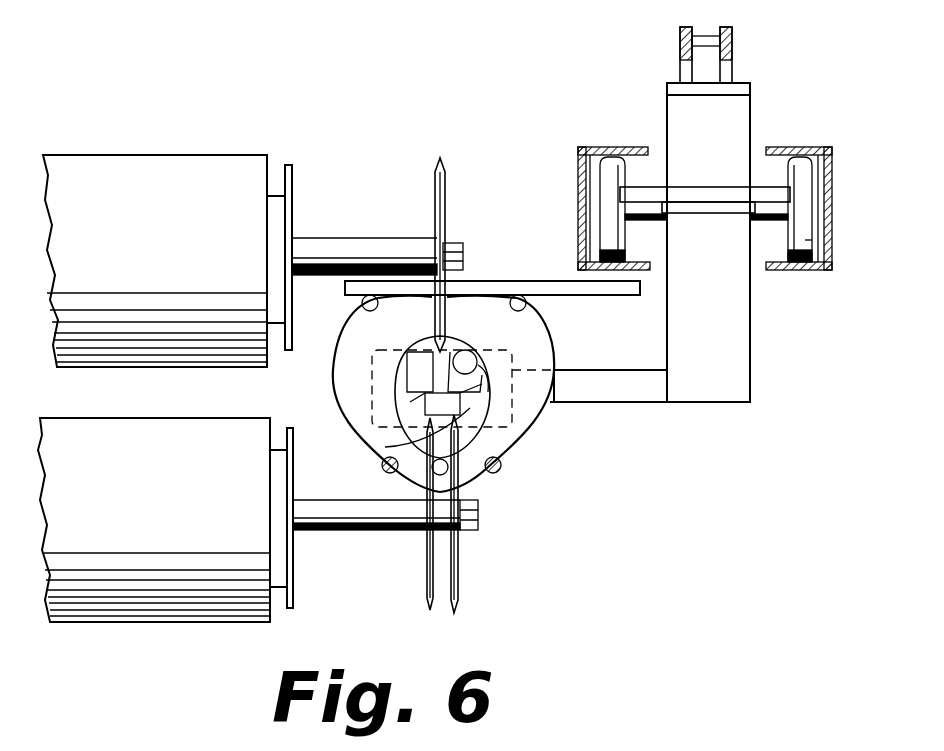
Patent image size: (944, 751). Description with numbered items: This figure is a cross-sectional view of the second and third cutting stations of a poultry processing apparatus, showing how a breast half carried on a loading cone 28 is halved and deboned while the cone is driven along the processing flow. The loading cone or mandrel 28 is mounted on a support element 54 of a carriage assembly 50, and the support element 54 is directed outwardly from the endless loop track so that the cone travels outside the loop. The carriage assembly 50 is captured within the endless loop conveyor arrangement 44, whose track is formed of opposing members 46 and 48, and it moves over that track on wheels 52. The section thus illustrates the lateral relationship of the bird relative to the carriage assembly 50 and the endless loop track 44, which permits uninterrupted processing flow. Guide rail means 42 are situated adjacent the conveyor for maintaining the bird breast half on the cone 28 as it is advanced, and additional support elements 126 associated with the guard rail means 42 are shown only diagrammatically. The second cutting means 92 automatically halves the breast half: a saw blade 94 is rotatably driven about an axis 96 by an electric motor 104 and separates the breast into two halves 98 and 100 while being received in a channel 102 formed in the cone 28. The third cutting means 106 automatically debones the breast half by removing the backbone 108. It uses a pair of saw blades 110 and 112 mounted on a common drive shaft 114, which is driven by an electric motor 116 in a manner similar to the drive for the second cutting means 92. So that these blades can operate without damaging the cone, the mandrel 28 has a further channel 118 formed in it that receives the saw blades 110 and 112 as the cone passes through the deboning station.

The loading cone 28 is at (432, 390).
The guide rail means 42 is at (362, 306).
The endless loop conveyor arrangement 44 is at (840, 184).
The opposing track member 46 is at (812, 272).
The opposing track member 48 is at (790, 146).
The carriage assembly 50 is at (622, 88).
The wheels 52 is at (600, 250).
The support element 54 is at (792, 382).
The second cutting means 92 is at (374, 170).
The saw blade 94 is at (449, 188).
The axis 96 is at (340, 248).
The breast half 98 is at (404, 342).
The breast half 100 is at (486, 342).
The channel 102 is at (488, 356).
The electric motor 104 is at (178, 270).
The third cutting means 106 is at (396, 608).
The backbone 108 is at (462, 494).
The saw blade 110 is at (446, 612).
The saw blade 112 is at (458, 614).
The drive shaft 114 is at (325, 535).
The electric motor 116 is at (165, 520).
The channel 118 is at (385, 447).
The support elements 126 is at (527, 281).